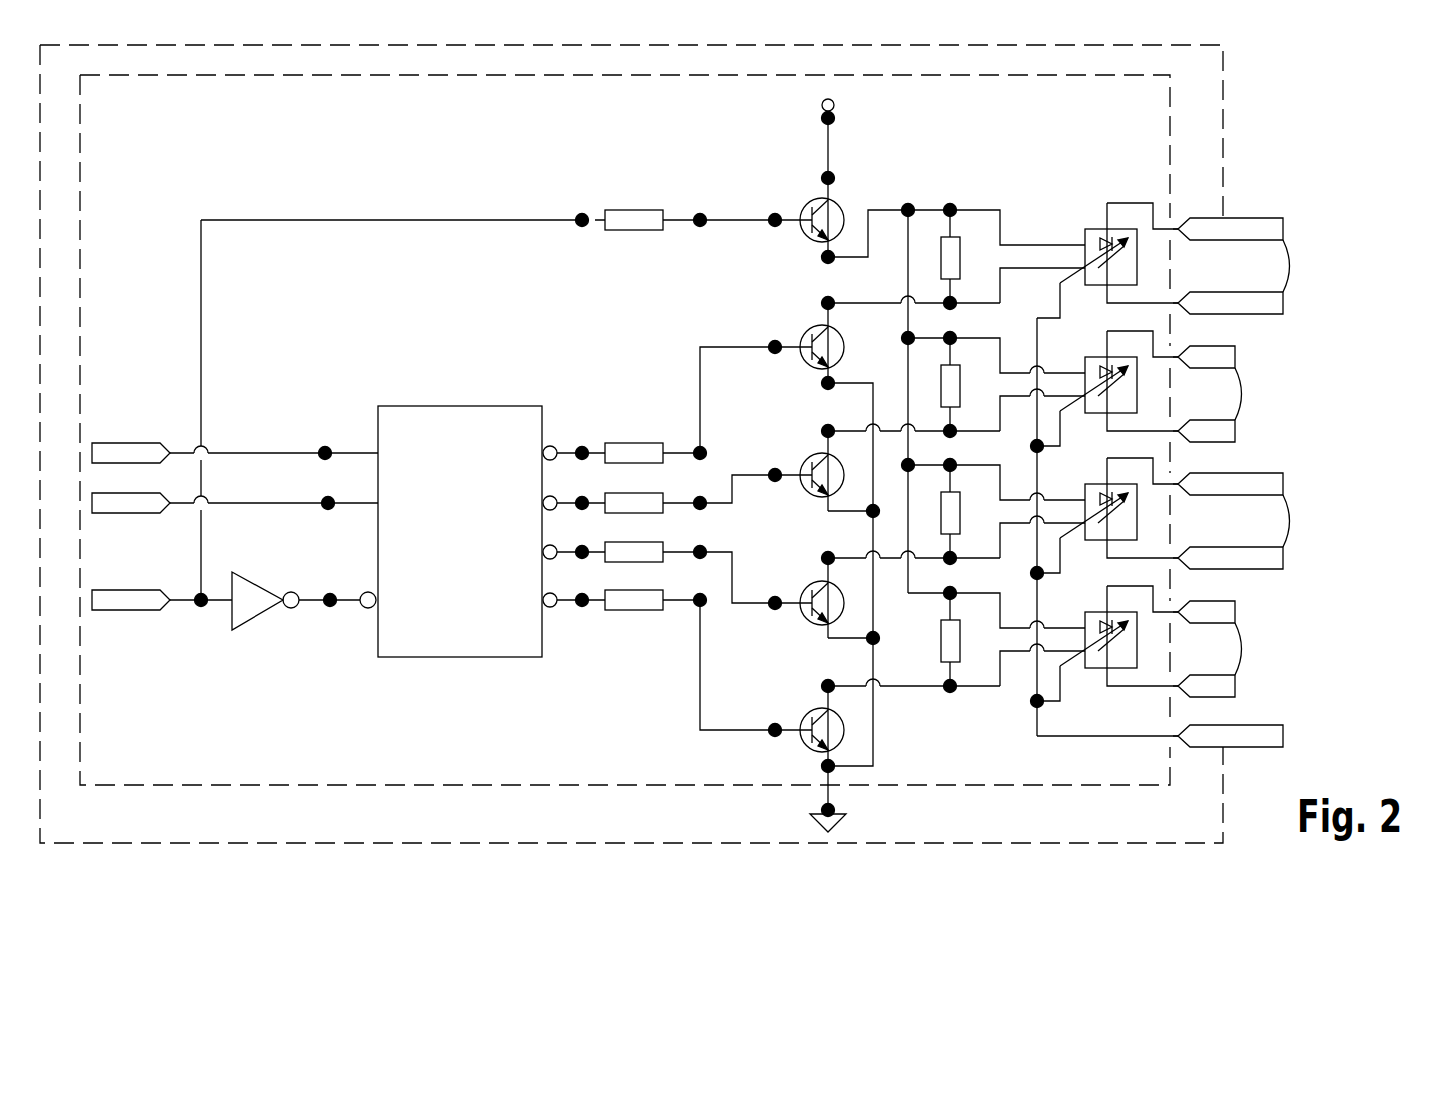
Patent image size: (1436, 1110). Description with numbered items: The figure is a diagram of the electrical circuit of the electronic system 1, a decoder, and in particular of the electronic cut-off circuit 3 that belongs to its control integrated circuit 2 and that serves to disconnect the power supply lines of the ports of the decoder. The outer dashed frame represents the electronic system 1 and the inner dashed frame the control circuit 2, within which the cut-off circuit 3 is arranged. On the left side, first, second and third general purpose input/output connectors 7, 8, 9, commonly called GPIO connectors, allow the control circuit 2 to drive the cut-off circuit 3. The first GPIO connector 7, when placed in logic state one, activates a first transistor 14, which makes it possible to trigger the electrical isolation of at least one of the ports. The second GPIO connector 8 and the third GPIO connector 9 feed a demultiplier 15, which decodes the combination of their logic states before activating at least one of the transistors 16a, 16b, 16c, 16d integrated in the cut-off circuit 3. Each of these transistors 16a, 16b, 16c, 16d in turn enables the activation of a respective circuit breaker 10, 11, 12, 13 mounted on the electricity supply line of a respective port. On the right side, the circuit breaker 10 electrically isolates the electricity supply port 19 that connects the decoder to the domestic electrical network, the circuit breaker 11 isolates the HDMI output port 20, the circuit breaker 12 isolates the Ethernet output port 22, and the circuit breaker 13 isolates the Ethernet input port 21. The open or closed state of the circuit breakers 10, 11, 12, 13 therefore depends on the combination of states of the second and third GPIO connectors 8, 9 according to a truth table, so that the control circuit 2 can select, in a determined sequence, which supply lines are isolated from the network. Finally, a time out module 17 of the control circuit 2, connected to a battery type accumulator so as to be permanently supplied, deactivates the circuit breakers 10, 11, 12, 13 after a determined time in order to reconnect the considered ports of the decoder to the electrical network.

The electronic system 1 is at (168, 844).
The control integrated circuit 2 is at (153, 786).
The electronic cut-off circuit 3 is at (470, 192).
The first GPIO connector 7 is at (135, 446).
The second GPIO connector 8 is at (137, 510).
The third GPIO connector 9 is at (150, 608).
The circuit breaker 10 is at (1087, 240).
The circuit breaker 11 is at (1097, 372).
The circuit breaker 12 is at (1094, 500).
The circuit breaker 13 is at (1096, 624).
The first transistor 14 is at (836, 210).
The demultiplier 15 is at (447, 536).
The transistor 16a is at (806, 330).
The transistor 16b is at (810, 456).
The transistor 16c is at (806, 620).
The transistor 16d is at (810, 712).
The time out module 17 is at (1262, 748).
The electricity supply port 19 is at (1291, 266).
The HDMI output port 20 is at (1243, 394).
The Ethernet input port 21 is at (1291, 521).
The Ethernet output port 22 is at (1243, 649).